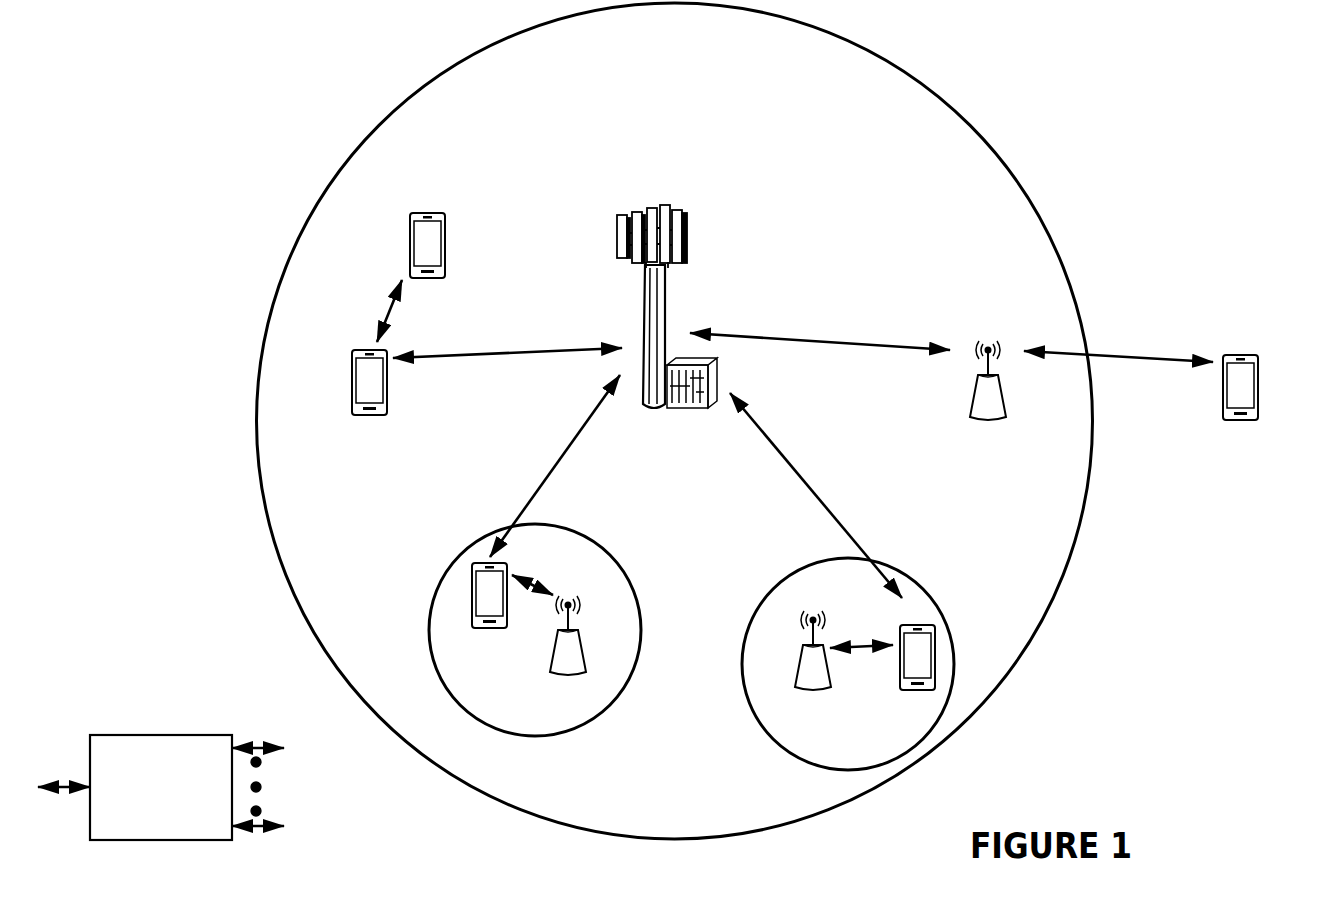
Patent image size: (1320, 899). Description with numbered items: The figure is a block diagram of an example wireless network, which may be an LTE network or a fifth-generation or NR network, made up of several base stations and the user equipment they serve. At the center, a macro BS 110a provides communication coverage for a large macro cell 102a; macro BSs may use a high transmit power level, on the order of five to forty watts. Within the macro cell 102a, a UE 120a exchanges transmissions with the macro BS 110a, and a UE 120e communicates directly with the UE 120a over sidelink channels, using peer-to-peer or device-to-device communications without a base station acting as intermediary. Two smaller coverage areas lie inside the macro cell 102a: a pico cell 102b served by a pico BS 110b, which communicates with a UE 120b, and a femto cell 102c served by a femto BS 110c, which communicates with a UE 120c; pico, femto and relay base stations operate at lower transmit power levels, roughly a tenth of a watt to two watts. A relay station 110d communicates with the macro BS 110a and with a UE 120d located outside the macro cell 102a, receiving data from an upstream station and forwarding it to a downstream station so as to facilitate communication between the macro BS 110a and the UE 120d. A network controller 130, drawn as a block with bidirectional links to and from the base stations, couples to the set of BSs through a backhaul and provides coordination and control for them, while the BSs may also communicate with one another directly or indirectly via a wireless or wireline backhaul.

The macro cell 102a is at (953, 101).
The macro BS 110a is at (663, 200).
The UE 120e is at (410, 232).
The UE 120a is at (352, 380).
The relay station 110d is at (988, 343).
The UE 120d is at (1253, 352).
The pico cell 102b is at (624, 568).
The UE 120b is at (474, 630).
The pico BS 110b is at (587, 664).
The femto cell 102c is at (787, 577).
The femto BS 110c is at (796, 673).
The UE 120c is at (898, 692).
The network controller 130 is at (158, 735).